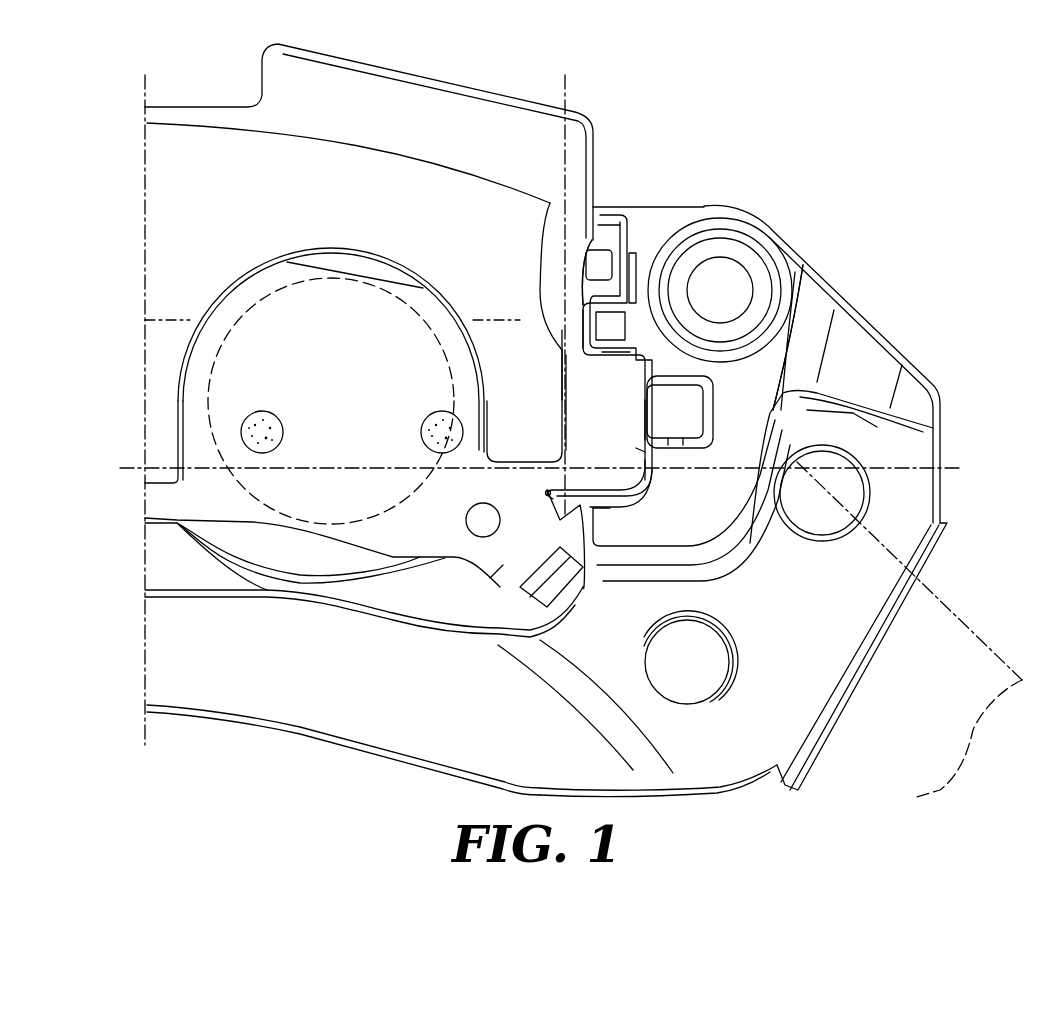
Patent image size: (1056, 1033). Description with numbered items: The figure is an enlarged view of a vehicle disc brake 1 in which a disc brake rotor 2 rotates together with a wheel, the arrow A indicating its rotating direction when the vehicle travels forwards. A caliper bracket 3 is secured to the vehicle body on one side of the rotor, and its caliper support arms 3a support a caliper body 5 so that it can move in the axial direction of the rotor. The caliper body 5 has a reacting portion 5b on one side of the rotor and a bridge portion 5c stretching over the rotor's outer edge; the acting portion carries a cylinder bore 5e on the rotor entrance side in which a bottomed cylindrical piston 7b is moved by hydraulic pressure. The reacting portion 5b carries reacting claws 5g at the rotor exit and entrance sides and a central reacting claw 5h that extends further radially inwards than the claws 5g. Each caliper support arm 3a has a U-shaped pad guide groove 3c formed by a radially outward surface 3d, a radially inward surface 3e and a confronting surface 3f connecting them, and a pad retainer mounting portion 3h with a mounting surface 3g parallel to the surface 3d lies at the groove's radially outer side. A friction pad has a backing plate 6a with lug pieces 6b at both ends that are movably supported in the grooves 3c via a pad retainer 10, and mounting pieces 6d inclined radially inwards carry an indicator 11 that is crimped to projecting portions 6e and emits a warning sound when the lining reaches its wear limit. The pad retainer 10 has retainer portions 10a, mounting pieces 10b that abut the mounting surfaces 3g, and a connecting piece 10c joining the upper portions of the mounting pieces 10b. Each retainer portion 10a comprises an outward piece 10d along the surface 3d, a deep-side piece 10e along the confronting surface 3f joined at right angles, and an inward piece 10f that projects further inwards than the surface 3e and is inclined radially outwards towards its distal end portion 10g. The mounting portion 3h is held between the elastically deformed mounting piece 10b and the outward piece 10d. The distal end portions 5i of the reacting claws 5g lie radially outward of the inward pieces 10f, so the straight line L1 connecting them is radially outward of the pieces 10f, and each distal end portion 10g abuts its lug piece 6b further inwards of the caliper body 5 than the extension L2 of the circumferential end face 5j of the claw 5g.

The vehicle disc brake 1 is at (533, 66).
The disc brake rotor 2 is at (975, 722).
The caliper bracket 3 is at (882, 323).
The caliper support arm 3a is at (808, 278).
The pad guide groove 3c is at (640, 452).
The radially outward surface 3d is at (620, 358).
The radially inward surface 3e is at (616, 505).
The confronting surface 3f is at (648, 478).
The mounting surface 3g is at (607, 303).
The pad retainer mounting portion 3h is at (582, 348).
The caliper body 5 is at (606, 135).
The reacting portion 5b is at (145, 228).
The bridge portion 5c is at (455, 92).
The cylinder bore 5e is at (256, 280).
The reacting claw 5g is at (480, 392).
The reacting claw 5h is at (172, 410).
The distal end portion 5i is at (494, 465).
The circumferential end face 5j is at (567, 422).
The backing plate 6a is at (423, 558).
The lug piece 6b is at (651, 418).
The mounting piece 6d is at (498, 580).
The projecting portion 6e is at (490, 524).
The piston 7b is at (243, 327).
The pad retainer 10 is at (636, 244).
The retainer portion 10a is at (652, 472).
The mounting piece 10b is at (585, 300).
The connecting piece 10c is at (605, 248).
The outward piece 10d is at (561, 380).
The deep-side piece 10e is at (640, 404).
The inward piece 10f is at (545, 495).
The distal end portion 10g is at (550, 488).
The indicator 11 is at (560, 577).
The arrow A is at (1017, 652).
The straight line L1 is at (960, 465).
The extension L2 is at (568, 100).